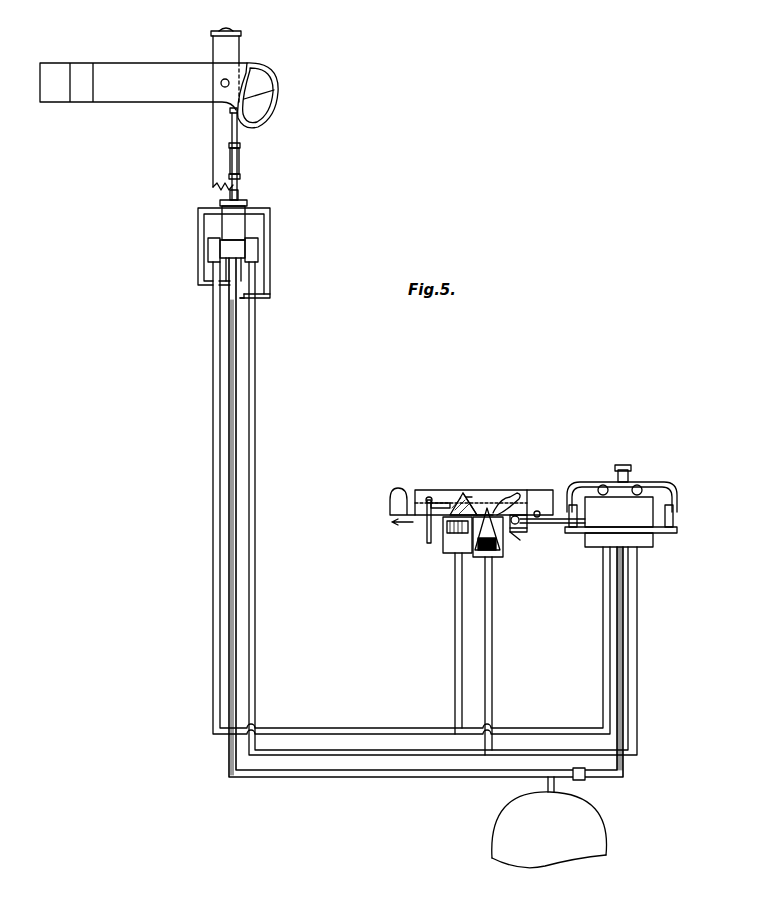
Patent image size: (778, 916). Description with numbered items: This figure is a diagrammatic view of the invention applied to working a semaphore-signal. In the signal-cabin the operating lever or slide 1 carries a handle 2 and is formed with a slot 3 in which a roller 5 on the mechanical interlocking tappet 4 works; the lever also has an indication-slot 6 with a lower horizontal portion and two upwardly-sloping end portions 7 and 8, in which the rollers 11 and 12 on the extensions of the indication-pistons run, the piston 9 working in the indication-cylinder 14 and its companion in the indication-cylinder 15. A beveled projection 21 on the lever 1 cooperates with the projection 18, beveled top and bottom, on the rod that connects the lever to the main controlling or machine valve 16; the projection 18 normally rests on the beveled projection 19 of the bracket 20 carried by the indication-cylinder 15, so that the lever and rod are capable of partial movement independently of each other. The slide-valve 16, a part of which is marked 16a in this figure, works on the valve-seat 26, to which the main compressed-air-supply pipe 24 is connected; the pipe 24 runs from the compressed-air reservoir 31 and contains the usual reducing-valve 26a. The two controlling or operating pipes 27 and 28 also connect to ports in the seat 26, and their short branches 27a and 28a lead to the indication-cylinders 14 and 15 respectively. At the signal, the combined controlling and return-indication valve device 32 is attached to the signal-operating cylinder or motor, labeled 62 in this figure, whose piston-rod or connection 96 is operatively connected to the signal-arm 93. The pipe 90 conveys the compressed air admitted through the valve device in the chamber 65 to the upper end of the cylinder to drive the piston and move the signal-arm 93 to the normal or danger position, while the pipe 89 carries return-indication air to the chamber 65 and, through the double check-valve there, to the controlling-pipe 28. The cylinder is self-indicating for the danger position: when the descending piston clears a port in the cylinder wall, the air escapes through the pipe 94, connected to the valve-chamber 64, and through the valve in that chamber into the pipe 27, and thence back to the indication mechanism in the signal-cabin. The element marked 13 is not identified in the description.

The signal-arm 93 is at (134, 97).
The piston-rod 96 is at (241, 186).
The valve stem plate 62 is at (248, 204).
The pipe 90 is at (199, 215).
The pipe 94 is at (205, 231).
The valve-chamber 64 is at (208, 252).
The chamber 65 is at (259, 250).
The combined controlling and return-indication valve 32 is at (232, 255).
The controlling or operating pipe 28 is at (270, 273).
The pipe 89 is at (270, 289).
The controlling or operating pipe 27 is at (212, 316).
The main compressed-air-supply pipe 24 is at (228, 760).
The reducing-valve 26a is at (586, 779).
The compressed-air reservoir 31 is at (549, 822).
The branch pipe 27a is at (455, 604).
The branch pipe 28a is at (492, 604).
The main controlling or machine valve 16 is at (668, 519).
The valve body 16a is at (619, 512).
The valve-seat 26 is at (621, 537).
The operating lever or slide 1 is at (540, 492).
The handle 2 is at (397, 488).
The mechanical interlocking tappet 4 is at (412, 524).
The indication-piston 9 is at (428, 543).
The roller 5 is at (427, 498).
The slot 3 is at (438, 502).
The indication-cylinder 14 is at (457, 535).
The roller 11 is at (460, 492).
The sloping end portion of slot 7 is at (470, 500).
The indication-slot 6 is at (482, 510).
The indication-cylinder 15 is at (498, 553).
The roller 12 is at (489, 508).
The block 13 is at (488, 542).
The sloping end portion of slot 8 is at (513, 496).
The beveled projection 21 is at (537, 511).
The projection 18 is at (520, 519).
The beveled projection 19 is at (522, 528).
The bracket 20 is at (518, 536).